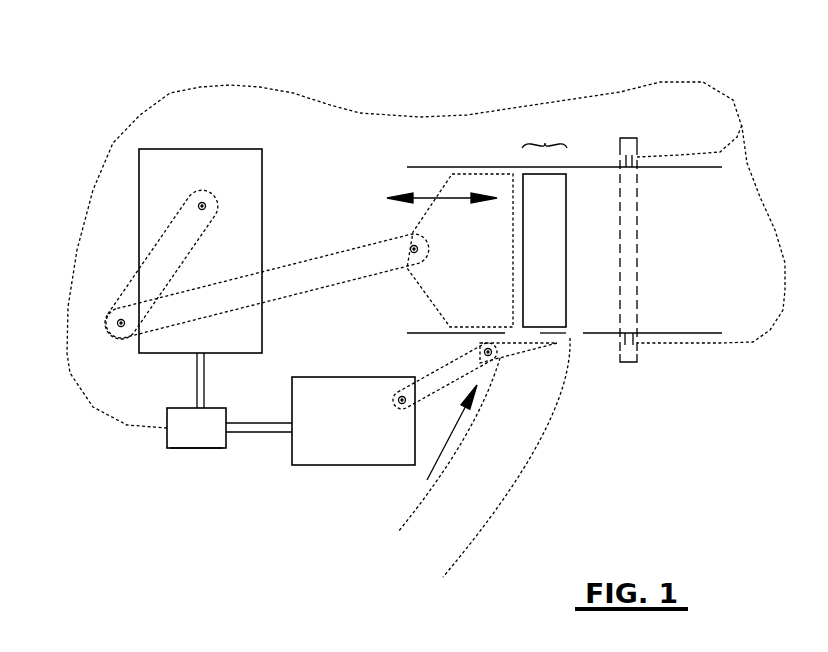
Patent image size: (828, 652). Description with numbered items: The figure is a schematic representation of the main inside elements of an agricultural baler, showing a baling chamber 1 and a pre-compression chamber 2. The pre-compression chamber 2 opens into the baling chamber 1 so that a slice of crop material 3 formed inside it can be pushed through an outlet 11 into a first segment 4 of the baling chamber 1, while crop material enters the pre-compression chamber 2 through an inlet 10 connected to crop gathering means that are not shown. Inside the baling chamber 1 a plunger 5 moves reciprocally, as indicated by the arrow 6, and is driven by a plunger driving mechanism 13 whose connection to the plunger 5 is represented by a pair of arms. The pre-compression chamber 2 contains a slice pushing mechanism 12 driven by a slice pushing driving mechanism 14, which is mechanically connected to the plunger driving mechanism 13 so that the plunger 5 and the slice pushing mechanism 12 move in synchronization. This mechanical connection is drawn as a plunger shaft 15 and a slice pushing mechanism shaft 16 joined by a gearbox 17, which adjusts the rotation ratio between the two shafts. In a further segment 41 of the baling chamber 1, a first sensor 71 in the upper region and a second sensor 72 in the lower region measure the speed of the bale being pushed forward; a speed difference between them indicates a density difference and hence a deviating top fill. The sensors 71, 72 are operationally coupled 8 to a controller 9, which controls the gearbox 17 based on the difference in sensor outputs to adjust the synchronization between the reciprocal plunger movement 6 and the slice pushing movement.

The baling chamber 1 is at (652, 269).
The pre-compression chamber 2 is at (479, 469).
The slice of crop material 3 is at (537, 269).
The first segment 4 is at (544, 131).
The plunger 5 is at (462, 269).
The arrow 6 is at (452, 198).
The operational coupling 8 is at (167, 93).
The controller 9 is at (187, 448).
The inlet 10 is at (442, 537).
The outlet 11 is at (547, 333).
The slice pushing mechanism 12 is at (513, 352).
The plunger driving mechanism 13 is at (238, 252).
The slice pushing driving mechanism 14 is at (359, 434).
The plunger shaft 15 is at (200, 400).
The slice pushing mechanism shaft 16 is at (260, 432).
The gearbox 17 is at (211, 442).
The further segment 41 is at (632, 210).
The first sensor 71 is at (627, 157).
The second sensor 72 is at (632, 345).